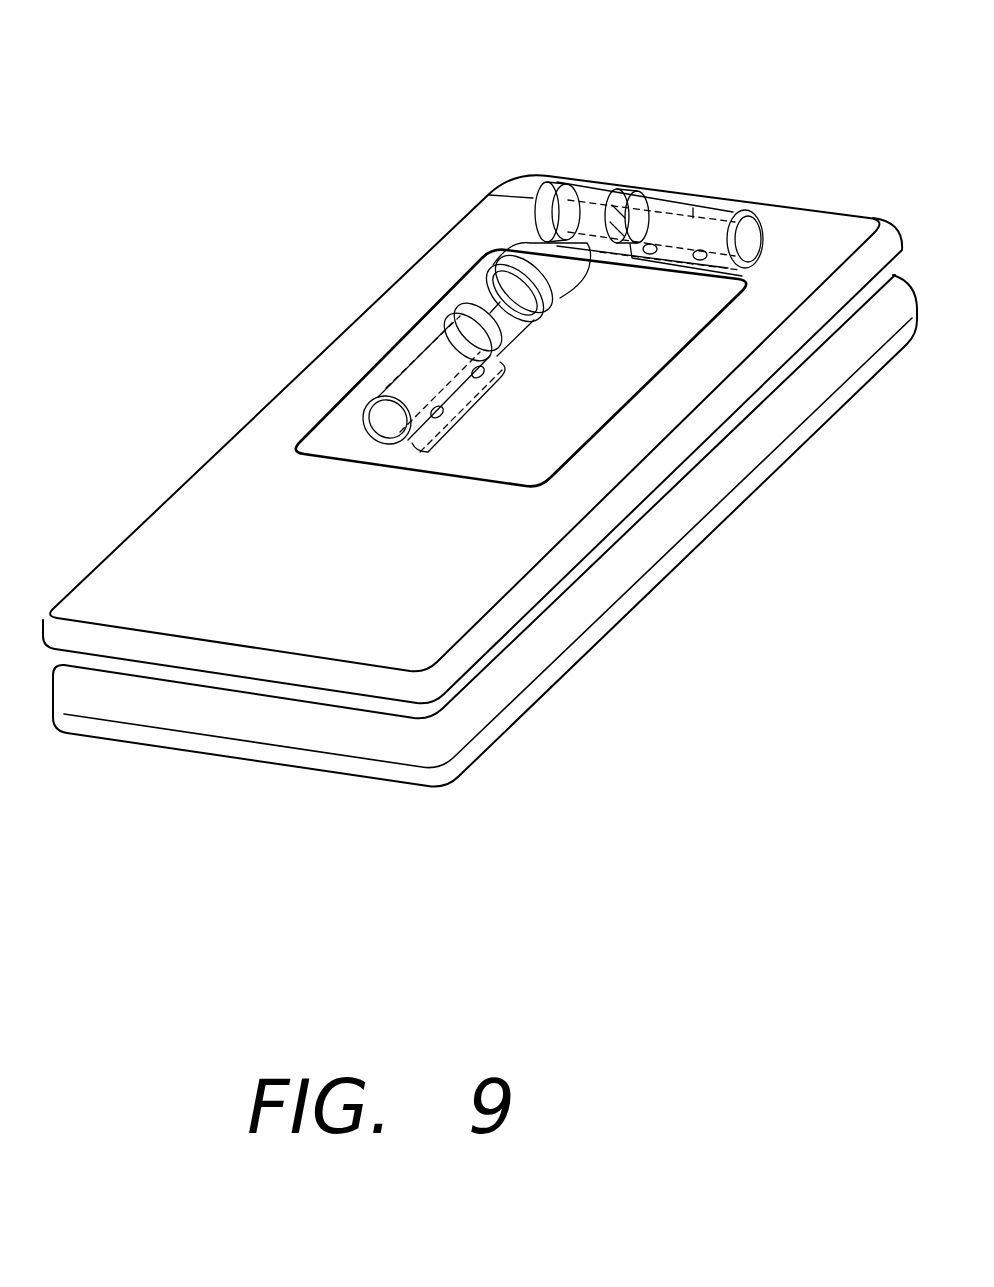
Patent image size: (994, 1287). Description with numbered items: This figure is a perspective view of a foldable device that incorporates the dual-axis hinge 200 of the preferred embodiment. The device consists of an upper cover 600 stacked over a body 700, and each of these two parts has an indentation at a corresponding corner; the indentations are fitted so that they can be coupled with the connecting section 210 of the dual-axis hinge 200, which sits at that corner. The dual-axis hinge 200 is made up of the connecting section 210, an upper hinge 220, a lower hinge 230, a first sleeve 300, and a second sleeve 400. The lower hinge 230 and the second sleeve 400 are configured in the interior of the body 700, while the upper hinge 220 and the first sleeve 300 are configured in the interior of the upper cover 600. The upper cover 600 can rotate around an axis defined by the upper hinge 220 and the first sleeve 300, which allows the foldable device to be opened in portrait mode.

The dual-axis hinge 200 is at (575, 253).
The connecting section 210 is at (531, 186).
The upper hinge 220 is at (590, 193).
The lower hinge 230 is at (495, 262).
The first sleeve 300 is at (697, 190).
The second sleeve 400 is at (420, 375).
The upper cover 600 is at (260, 453).
The body 700 is at (315, 730).